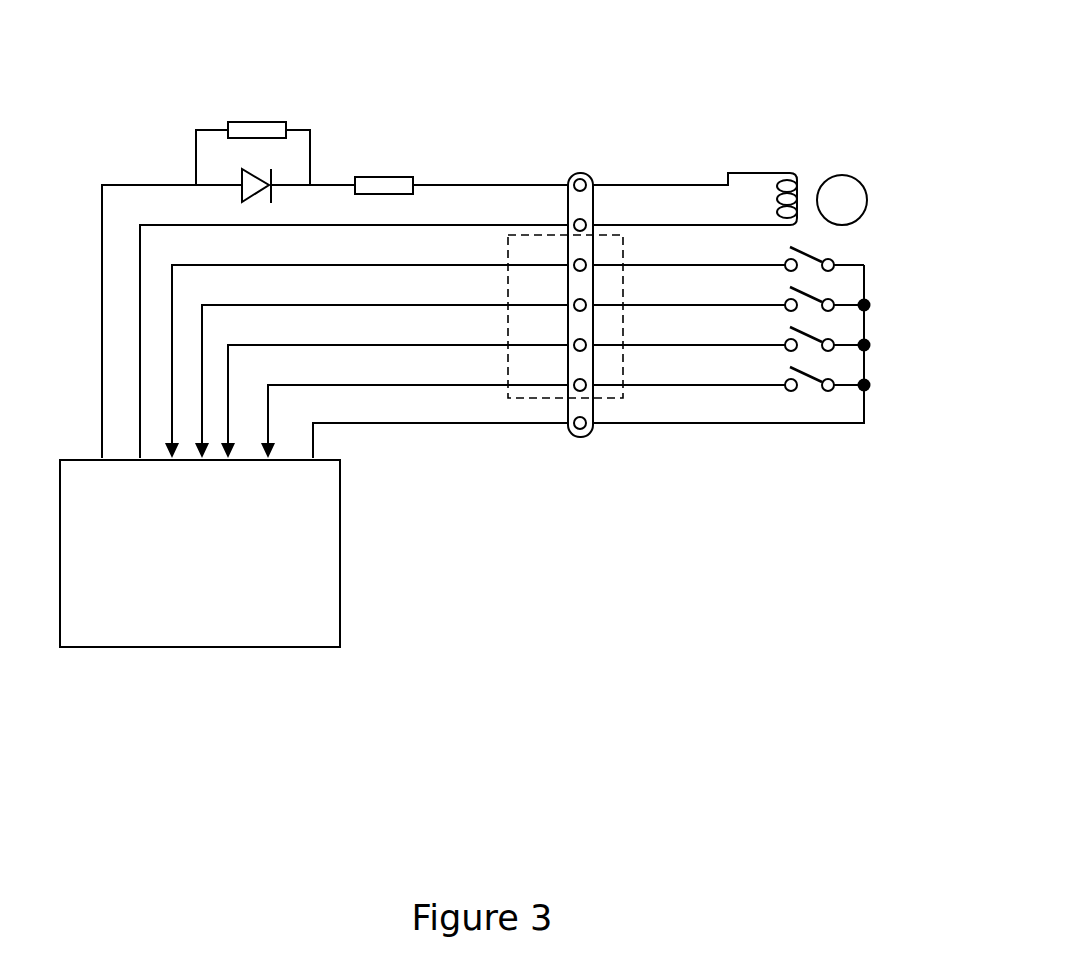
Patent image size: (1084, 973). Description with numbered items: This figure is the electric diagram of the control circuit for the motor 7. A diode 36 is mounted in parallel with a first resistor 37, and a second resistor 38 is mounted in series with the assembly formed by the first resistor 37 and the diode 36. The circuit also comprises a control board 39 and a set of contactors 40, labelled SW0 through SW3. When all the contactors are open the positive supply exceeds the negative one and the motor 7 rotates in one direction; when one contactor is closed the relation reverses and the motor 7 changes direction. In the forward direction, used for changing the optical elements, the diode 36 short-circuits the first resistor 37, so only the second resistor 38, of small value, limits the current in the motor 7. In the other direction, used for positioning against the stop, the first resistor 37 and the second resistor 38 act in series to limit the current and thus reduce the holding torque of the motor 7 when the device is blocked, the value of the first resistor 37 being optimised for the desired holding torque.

The motor 7 is at (843, 175).
The diode 36 is at (245, 182).
The first resistor 37 is at (252, 122).
The second resistor 38 is at (383, 177).
The control board 39 is at (340, 630).
The set of contactors 40 is at (615, 402).